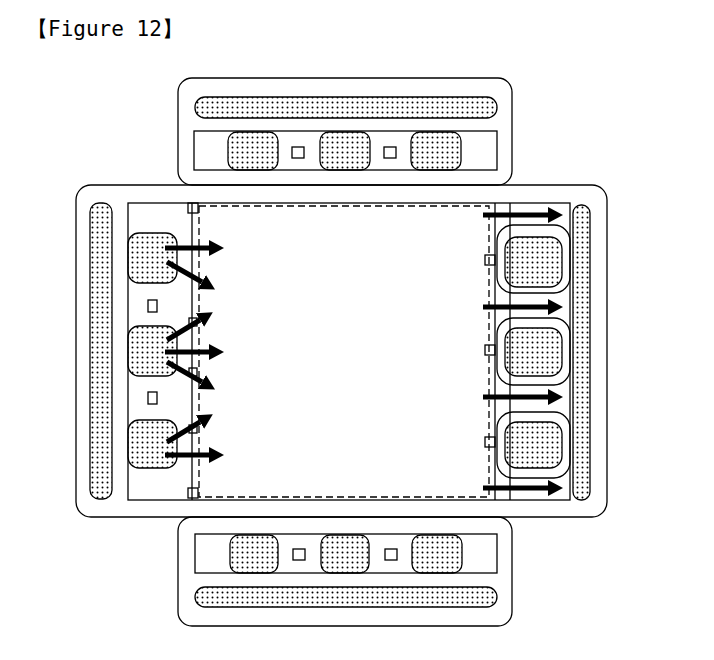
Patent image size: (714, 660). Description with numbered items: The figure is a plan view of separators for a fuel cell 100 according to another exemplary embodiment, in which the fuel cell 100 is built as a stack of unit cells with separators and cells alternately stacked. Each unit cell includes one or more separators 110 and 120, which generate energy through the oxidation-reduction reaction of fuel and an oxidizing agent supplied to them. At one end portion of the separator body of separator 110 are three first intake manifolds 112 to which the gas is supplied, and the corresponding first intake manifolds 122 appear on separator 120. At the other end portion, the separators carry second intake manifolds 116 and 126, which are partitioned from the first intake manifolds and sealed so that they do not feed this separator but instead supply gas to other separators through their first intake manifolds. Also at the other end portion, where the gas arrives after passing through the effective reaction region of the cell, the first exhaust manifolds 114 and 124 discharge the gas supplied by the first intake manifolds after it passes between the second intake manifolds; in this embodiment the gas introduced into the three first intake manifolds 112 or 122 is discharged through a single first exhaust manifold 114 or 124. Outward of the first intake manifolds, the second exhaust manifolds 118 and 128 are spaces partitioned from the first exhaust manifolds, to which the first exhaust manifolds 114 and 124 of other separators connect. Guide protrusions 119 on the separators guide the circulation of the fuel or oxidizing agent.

The fuel cell 100 is at (574, 146).
The separator 110 is at (597, 260).
The first intake manifold 112 is at (142, 262).
The first exhaust manifold 114 is at (579, 435).
The second intake manifold 116 is at (551, 452).
The second exhaust manifold 118 is at (98, 445).
The guide protrusion 119 is at (147, 398).
The separator 120 is at (512, 558).
The first intake manifold 122 is at (240, 153).
The first exhaust manifold 124 is at (200, 597).
The second intake manifold 126 is at (240, 553).
The second exhaust manifold 128 is at (196, 107).